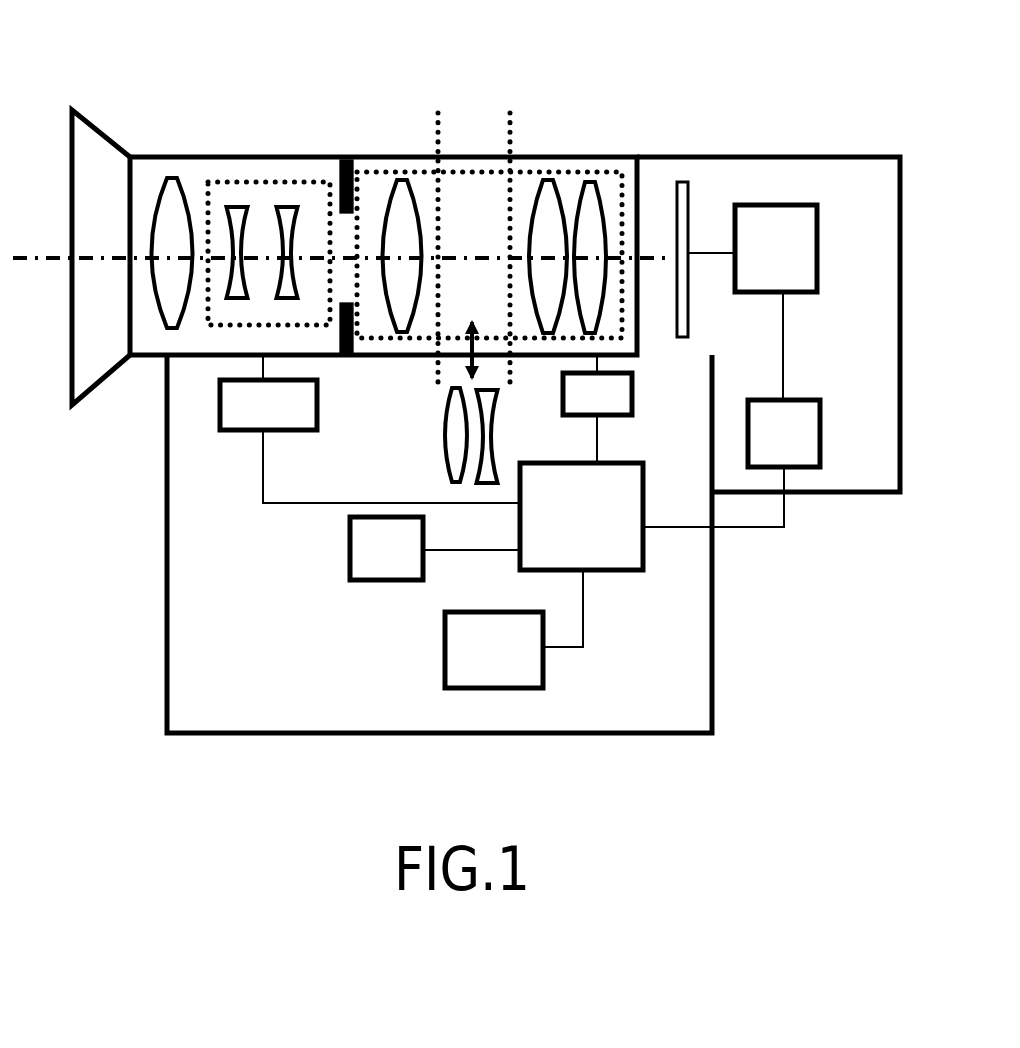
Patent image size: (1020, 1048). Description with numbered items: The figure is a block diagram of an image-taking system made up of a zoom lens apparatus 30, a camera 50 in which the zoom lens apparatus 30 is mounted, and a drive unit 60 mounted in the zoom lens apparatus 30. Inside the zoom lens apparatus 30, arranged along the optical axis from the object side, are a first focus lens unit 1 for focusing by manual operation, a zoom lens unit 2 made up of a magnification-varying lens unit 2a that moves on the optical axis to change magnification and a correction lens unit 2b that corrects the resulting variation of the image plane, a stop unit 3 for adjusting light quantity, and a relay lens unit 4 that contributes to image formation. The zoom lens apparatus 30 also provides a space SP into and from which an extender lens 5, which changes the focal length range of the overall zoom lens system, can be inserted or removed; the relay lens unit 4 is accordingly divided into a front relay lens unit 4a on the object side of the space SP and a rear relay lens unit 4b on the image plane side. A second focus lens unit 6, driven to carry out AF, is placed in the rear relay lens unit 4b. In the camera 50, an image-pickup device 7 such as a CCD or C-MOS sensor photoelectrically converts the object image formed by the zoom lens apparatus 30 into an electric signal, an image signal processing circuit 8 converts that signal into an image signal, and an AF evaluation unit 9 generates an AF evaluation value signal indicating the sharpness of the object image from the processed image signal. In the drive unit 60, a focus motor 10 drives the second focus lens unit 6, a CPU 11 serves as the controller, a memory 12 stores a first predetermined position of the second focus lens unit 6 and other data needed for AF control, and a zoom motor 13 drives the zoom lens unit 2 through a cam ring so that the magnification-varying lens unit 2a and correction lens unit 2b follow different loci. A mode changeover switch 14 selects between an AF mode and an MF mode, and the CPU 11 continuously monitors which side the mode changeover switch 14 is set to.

The zoom lens apparatus 30 is at (147, 153).
The first focus lens unit 1 is at (175, 177).
The zoom lens unit 2 is at (210, 180).
The magnification-varying lens unit 2a is at (230, 205).
The correction lens unit 2b is at (285, 205).
The stop unit 3 is at (345, 158).
The relay lens unit 4 is at (370, 172).
The front relay lens unit 4a is at (400, 177).
The space SP is at (470, 170).
The rear relay lens unit 4b is at (568, 185).
The extender lens 5 is at (452, 430).
The second focus lens unit 6 is at (595, 187).
The image-pickup device 7 is at (682, 180).
The image signal processing circuit 8 is at (752, 302).
The AF evaluation unit 9 is at (731, 463).
The focus motor 10 is at (597, 409).
The CPU 11 is at (581, 516).
The memory 12 is at (435, 548).
The zoom motor 13 is at (370, 429).
The mode changeover switch 14 is at (514, 629).
The camera 50 is at (782, 153).
The drive unit 60 is at (250, 737).